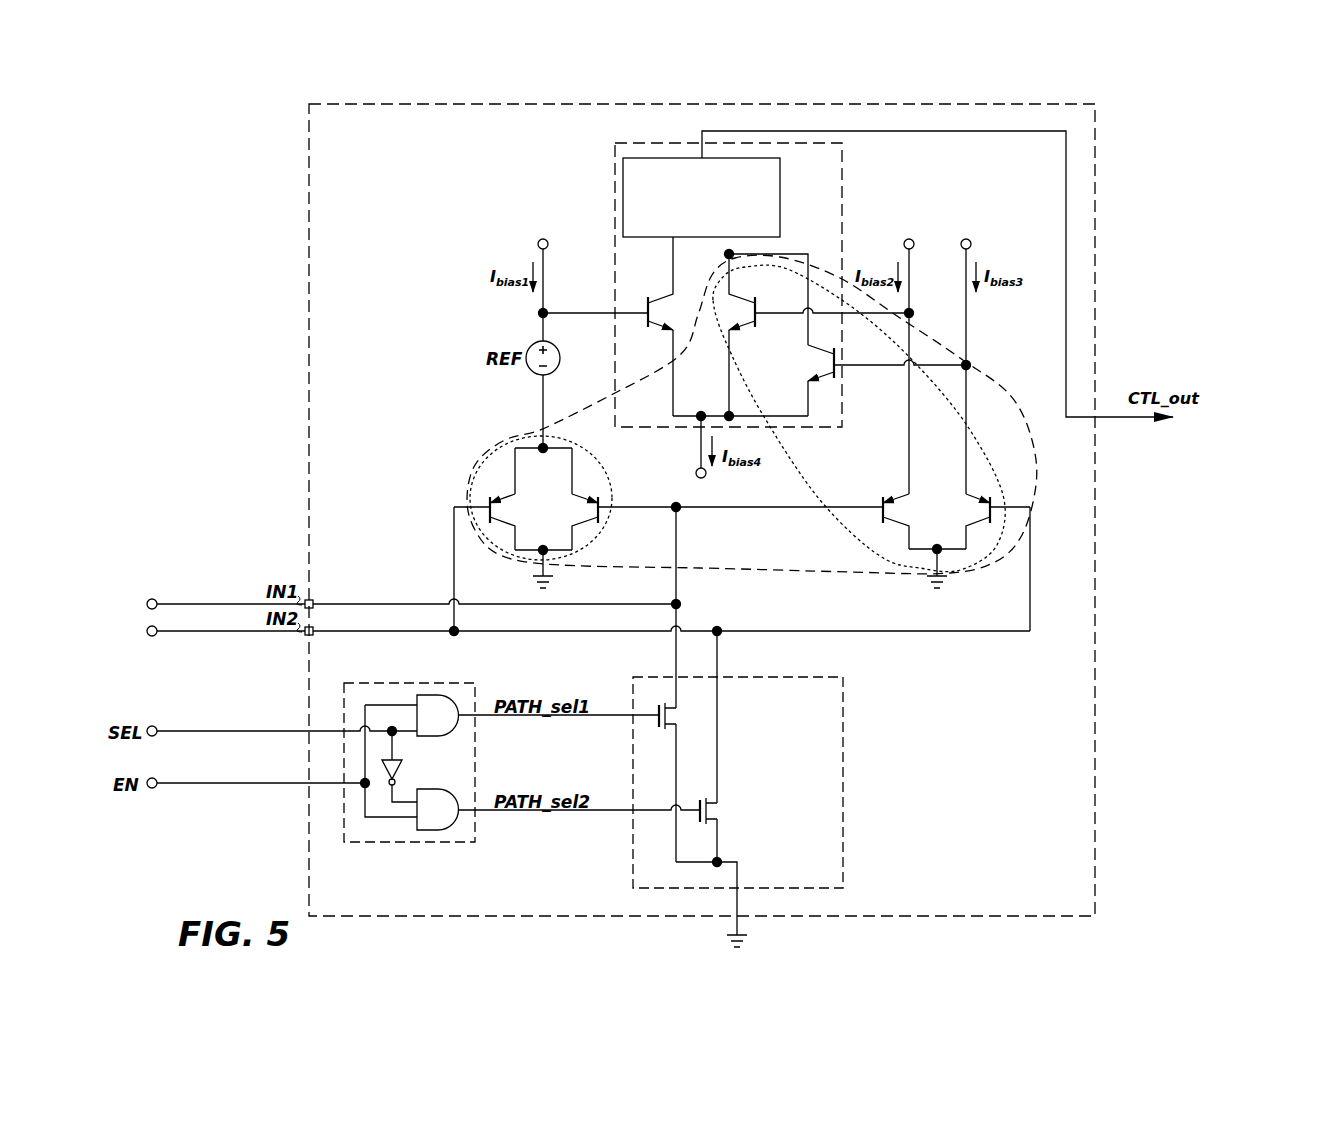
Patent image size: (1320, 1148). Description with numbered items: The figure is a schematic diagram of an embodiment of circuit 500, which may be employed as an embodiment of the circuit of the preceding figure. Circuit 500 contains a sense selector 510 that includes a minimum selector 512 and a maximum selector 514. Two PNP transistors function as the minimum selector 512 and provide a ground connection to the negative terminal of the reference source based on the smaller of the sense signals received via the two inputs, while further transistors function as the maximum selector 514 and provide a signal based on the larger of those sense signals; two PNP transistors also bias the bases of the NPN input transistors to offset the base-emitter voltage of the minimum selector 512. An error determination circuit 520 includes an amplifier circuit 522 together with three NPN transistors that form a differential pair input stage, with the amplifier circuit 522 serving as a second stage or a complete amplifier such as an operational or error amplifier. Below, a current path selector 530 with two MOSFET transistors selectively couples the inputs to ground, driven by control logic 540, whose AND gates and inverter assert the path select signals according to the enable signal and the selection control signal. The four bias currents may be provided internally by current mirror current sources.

The circuit 500 is at (1110, 112).
The sense selector 510 is at (1010, 394).
The minimum selector 512 is at (602, 478).
The maximum selector 514 is at (986, 462).
The error determination circuit 520 is at (615, 143).
The amplifier circuit 522 is at (780, 195).
The current path selector 530 is at (843, 790).
The control logic 540 is at (440, 683).